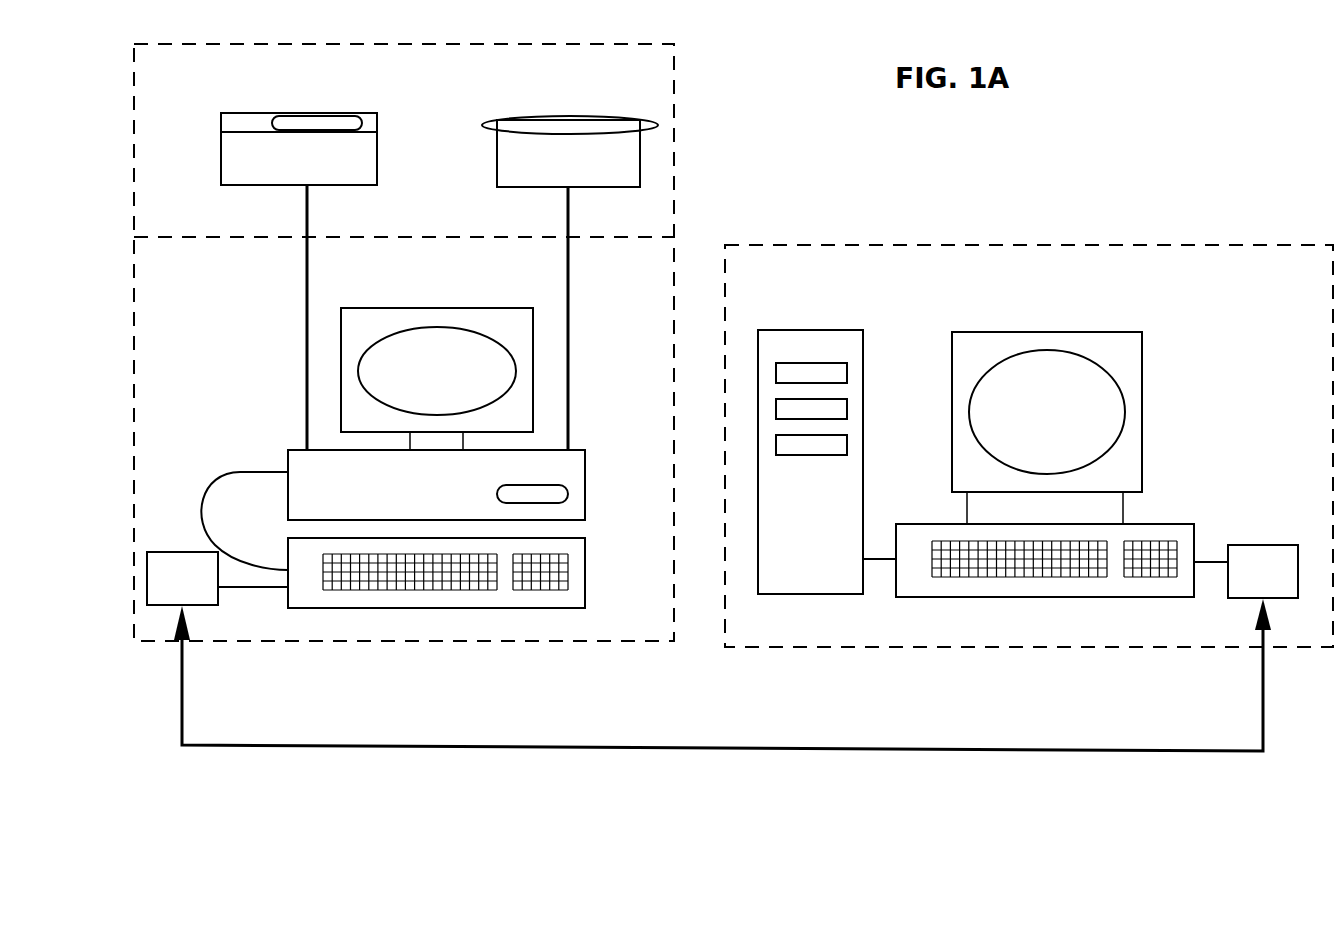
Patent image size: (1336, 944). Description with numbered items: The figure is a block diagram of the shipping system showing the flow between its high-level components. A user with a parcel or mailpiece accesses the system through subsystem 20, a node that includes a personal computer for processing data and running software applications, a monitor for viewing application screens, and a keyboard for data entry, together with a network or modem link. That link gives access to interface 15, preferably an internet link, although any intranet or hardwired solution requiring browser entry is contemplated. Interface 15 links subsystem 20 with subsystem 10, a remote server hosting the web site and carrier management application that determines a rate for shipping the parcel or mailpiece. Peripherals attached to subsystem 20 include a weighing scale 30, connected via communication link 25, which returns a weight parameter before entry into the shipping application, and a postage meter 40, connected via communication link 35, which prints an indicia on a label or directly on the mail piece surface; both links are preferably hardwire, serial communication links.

The subsystem 10 is at (1320, 160).
The interface 15 is at (710, 752).
The subsystem 20 is at (43, 272).
The communication link 25 is at (570, 317).
The weighing scale 30 is at (570, 151).
The communication link 35 is at (306, 318).
The postage meter 40 is at (299, 149).